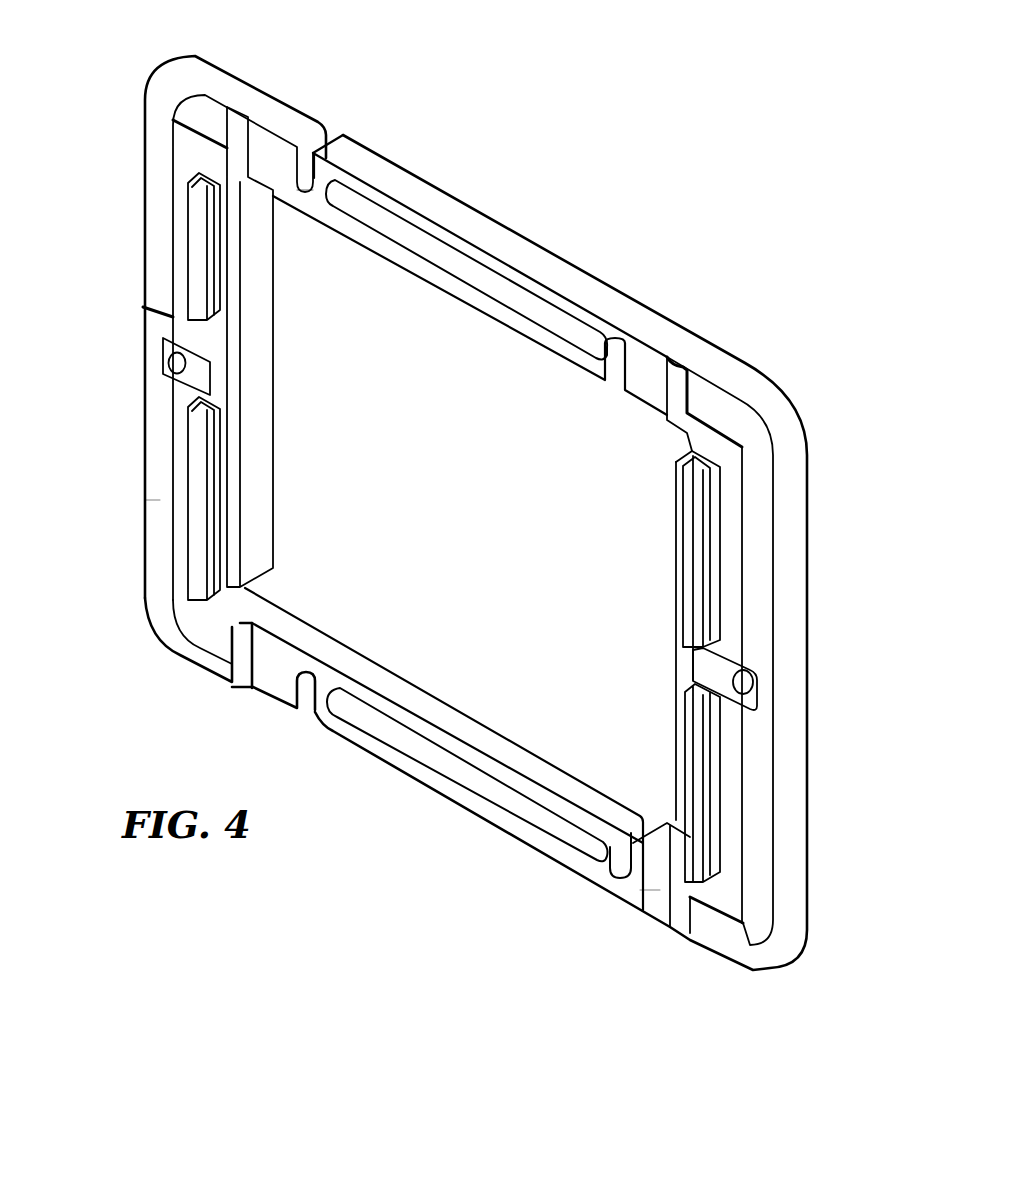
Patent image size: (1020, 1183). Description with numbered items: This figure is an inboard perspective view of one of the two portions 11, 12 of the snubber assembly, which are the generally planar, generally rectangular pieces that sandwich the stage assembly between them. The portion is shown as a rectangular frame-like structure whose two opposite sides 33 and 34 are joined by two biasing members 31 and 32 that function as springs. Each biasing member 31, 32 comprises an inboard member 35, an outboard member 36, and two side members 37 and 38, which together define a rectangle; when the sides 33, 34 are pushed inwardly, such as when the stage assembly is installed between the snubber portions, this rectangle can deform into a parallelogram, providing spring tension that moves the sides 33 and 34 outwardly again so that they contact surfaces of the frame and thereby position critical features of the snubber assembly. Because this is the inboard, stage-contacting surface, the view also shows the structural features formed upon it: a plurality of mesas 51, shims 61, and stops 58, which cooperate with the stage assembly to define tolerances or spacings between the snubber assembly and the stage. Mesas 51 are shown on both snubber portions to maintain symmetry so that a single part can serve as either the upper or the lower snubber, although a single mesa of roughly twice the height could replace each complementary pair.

The portion of snubber assembly 11 is at (91, 538).
The portion of snubber assembly 12 is at (102, 497).
The biasing member 31 is at (602, 203).
The biasing member 32 is at (553, 888).
The side 33 is at (797, 698).
The side 34 is at (150, 237).
The inboard member 35 is at (468, 290).
The outboard member 36 is at (446, 207).
The side member 37 is at (620, 345).
The side member 38 is at (305, 172).
The mesa 51 is at (203, 320).
The stop 58 is at (236, 420).
The shim 61 is at (180, 207).